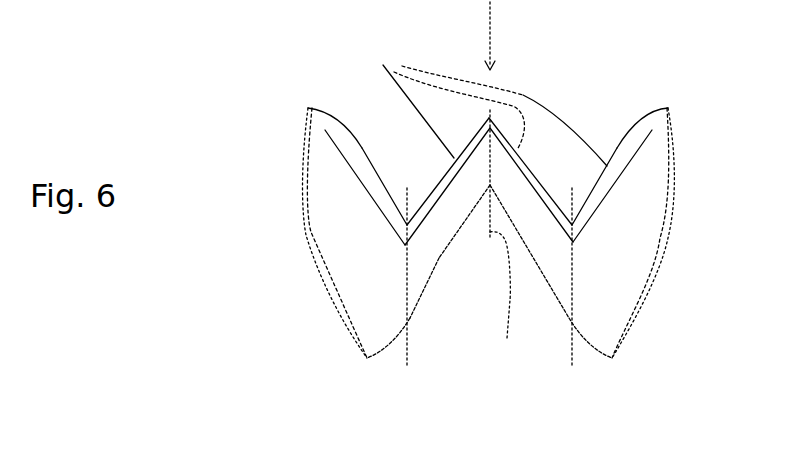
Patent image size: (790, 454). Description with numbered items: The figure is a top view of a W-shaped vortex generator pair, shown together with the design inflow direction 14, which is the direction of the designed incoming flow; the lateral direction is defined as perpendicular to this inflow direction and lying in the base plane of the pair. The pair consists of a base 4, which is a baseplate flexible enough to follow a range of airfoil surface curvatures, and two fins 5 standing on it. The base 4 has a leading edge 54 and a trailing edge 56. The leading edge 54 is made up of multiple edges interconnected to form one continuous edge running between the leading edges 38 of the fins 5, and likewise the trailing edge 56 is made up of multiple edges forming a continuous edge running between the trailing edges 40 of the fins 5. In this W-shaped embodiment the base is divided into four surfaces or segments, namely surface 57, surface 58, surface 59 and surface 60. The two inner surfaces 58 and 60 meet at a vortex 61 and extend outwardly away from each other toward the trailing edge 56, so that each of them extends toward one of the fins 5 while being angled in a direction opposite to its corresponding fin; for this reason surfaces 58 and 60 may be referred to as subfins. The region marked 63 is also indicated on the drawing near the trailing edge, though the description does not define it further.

The base 4 is at (426, 290).
The fins 5 is at (308, 231).
The design inflow direction 14 is at (508, 36).
The leading edges of the fins 38 is at (308, 108).
The trailing edges of the fins 40 is at (367, 358).
The leading edge 54 is at (362, 149).
The trailing edge 56 is at (442, 258).
The surface 57 is at (366, 194).
The surface 58 is at (447, 181).
The surface 59 is at (612, 190).
The surface 60 is at (531, 180).
The vortex 61 is at (487, 116).
The central width region 63 is at (408, 347).